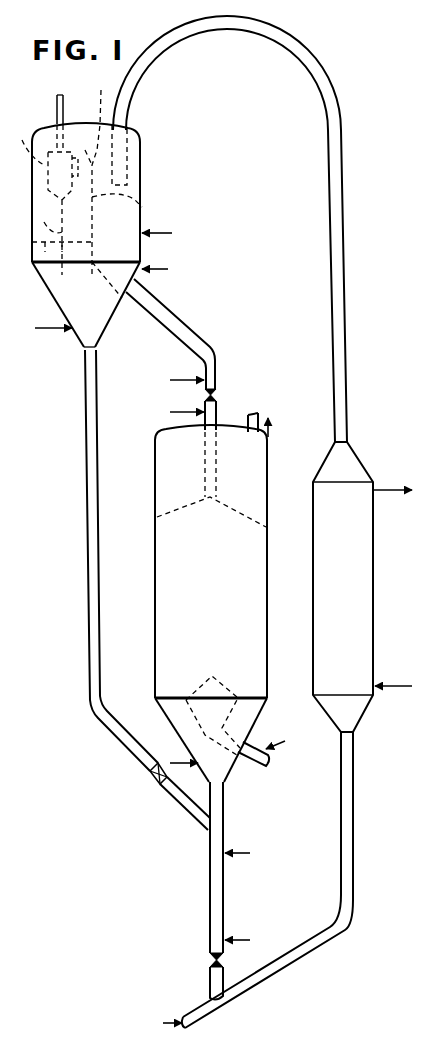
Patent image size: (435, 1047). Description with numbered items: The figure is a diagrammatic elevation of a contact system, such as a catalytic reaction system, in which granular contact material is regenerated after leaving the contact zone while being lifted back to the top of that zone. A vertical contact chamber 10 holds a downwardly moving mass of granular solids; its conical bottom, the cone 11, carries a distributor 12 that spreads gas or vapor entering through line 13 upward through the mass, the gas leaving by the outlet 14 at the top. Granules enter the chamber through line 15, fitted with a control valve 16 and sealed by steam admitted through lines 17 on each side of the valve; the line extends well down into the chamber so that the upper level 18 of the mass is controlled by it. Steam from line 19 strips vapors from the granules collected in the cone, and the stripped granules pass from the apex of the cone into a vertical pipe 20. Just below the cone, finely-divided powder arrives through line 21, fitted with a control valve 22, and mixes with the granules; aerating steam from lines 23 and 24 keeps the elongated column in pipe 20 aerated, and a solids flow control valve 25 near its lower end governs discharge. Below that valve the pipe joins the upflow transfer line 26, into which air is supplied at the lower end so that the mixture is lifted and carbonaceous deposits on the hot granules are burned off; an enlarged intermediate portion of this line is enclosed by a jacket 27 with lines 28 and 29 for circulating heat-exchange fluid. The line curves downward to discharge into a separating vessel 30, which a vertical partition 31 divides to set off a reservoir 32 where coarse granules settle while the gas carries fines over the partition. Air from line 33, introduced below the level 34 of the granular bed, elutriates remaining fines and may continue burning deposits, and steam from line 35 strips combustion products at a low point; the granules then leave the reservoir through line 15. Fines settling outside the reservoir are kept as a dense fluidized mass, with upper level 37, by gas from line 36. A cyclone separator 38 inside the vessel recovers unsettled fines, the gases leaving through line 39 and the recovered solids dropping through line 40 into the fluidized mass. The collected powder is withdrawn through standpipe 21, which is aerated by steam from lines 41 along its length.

The vertical contact chamber 10 is at (266, 506).
The cone 11 is at (258, 717).
The distributor 12 is at (229, 690).
The line 13 is at (260, 766).
The gas or vapor outlet 14 is at (248, 412).
The line 15 is at (216, 354).
The control valve 16 is at (214, 396).
The lines 17 is at (178, 378).
The upper level 18 is at (150, 512).
The line 19 is at (174, 762).
The vertical pipe 20 is at (210, 900).
The line 21 is at (122, 749).
The control valve 22 is at (152, 784).
The line 23 is at (252, 853).
The line 24 is at (246, 938).
The solids flow control valve 25 is at (208, 960).
The upflow transfer line 26 is at (247, 988).
The jacket 27 is at (368, 607).
The line 28 is at (396, 692).
The line 29 is at (387, 487).
The separating vessel 30 is at (141, 175).
The vertical partition 31 is at (103, 188).
The reservoir 32 is at (132, 190).
The line 33 is at (165, 236).
The level 34 is at (143, 206).
The line 35 is at (158, 275).
The line 36 is at (52, 331).
The upper level 37 is at (46, 278).
The cyclone separator 38 is at (26, 139).
The line 39 is at (56, 110).
The line 40 is at (62, 228).
The lines 41 is at (85, 550).